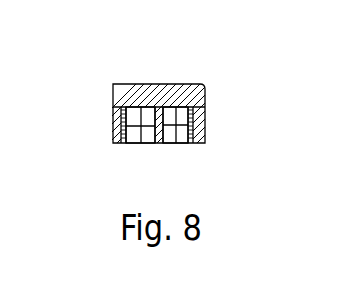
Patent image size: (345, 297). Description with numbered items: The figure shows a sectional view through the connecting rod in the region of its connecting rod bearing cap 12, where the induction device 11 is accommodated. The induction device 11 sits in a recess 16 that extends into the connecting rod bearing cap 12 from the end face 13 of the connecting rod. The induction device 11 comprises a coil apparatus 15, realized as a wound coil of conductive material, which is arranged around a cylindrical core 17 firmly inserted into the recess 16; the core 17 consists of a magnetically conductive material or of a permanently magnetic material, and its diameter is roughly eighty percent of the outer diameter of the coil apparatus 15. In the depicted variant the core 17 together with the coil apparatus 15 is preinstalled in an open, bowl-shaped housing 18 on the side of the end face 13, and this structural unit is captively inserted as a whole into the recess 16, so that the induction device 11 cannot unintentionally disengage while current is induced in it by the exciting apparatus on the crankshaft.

The induction device 11 is at (196, 147).
The connecting rod bearing cap 12 is at (192, 92).
The end face 13 is at (121, 140).
The coil apparatus 15 is at (200, 118).
The recess 16 is at (120, 120).
The core 17 is at (160, 107).
The housing 18 is at (200, 130).